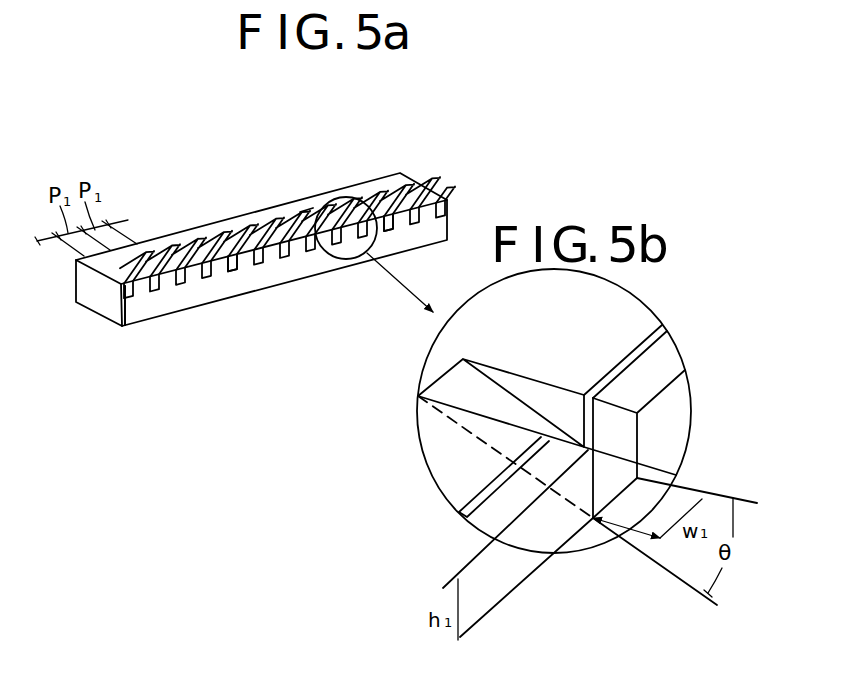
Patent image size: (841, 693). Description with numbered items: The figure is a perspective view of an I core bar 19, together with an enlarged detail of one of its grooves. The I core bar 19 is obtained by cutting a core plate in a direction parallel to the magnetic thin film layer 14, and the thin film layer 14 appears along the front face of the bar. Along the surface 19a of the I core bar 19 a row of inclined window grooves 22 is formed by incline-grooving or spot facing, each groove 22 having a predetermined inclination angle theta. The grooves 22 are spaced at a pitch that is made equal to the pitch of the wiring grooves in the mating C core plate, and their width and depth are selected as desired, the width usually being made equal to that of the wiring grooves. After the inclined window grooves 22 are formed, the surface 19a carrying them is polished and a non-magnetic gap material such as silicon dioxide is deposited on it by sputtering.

In FIG. 5A, the magnetic thin film layer 14 is at (115, 306).
In FIG. 5A, the I core bar 19 is at (467, 156).
In FIG. 5A, the surface of the I core bar 19a is at (302, 210).
In FIG. 5A, the inclined window groove 22 is at (382, 193).
In FIG. 5B, the inclined window groove 22 is at (503, 400).